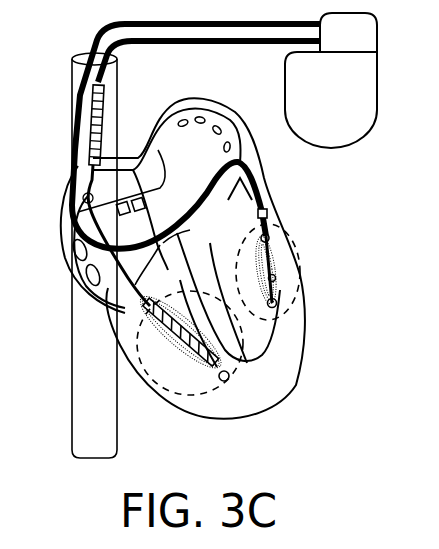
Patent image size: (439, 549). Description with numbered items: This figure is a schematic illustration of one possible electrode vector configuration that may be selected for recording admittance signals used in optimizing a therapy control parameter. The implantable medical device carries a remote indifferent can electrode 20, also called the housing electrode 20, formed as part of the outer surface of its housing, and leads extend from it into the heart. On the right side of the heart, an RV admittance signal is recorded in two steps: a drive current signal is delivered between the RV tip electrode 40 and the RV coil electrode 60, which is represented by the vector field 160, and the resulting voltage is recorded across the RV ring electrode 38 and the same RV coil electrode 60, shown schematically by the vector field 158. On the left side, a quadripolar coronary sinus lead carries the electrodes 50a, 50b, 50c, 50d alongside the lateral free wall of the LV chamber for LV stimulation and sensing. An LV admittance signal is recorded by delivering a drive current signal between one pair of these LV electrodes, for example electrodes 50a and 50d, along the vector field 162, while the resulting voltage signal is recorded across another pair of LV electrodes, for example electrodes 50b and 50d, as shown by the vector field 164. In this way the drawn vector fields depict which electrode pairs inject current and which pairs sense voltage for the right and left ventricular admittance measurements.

The remote indifferent can electrode 20 is at (377, 107).
The RV ring electrode 38 is at (225, 378).
The RV tip electrode 40 is at (296, 385).
The LV electrode 50a is at (278, 303).
The LV electrode 50b is at (276, 278).
The LV electrode 50c is at (258, 240).
The LV electrode 50d is at (266, 210).
The RV coil electrode 60 is at (175, 304).
The vector field 158 is at (175, 348).
The vector field 160 is at (145, 362).
The vector field 162 is at (300, 248).
The vector field 164 is at (285, 308).